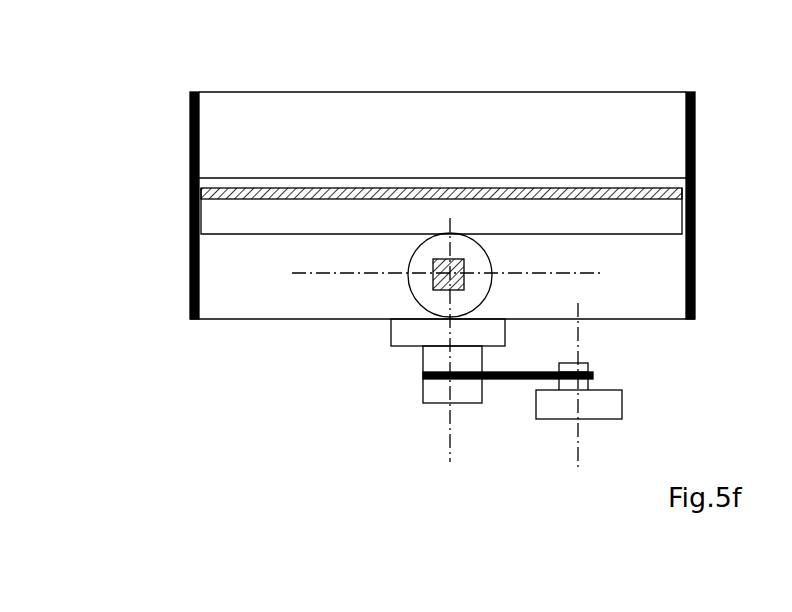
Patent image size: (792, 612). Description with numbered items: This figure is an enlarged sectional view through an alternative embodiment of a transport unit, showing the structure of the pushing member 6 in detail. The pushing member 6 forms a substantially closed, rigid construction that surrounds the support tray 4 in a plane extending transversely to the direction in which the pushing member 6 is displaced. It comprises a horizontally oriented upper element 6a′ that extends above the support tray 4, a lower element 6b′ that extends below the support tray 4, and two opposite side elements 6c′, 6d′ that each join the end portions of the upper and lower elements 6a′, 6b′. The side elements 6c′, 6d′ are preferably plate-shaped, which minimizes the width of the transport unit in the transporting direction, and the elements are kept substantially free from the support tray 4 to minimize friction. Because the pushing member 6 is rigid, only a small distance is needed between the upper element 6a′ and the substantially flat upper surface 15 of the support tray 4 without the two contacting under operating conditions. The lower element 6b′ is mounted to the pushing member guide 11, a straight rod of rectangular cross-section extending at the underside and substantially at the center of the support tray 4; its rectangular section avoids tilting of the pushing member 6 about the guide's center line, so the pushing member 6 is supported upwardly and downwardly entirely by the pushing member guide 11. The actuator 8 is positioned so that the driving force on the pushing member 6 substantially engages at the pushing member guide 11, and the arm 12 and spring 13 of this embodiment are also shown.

The pushing member 6 is at (507, 84).
The upper element 6a′ is at (340, 104).
The lower element 6b′ is at (667, 253).
The side element 6c′ is at (190, 121).
The side element 6d′ is at (695, 130).
The support tray 4 is at (670, 216).
The upper surface 15 is at (427, 188).
The pushing member guide 11 is at (433, 284).
The arm 12 is at (510, 380).
The spring 13 is at (448, 420).
The actuator 8 is at (622, 398).